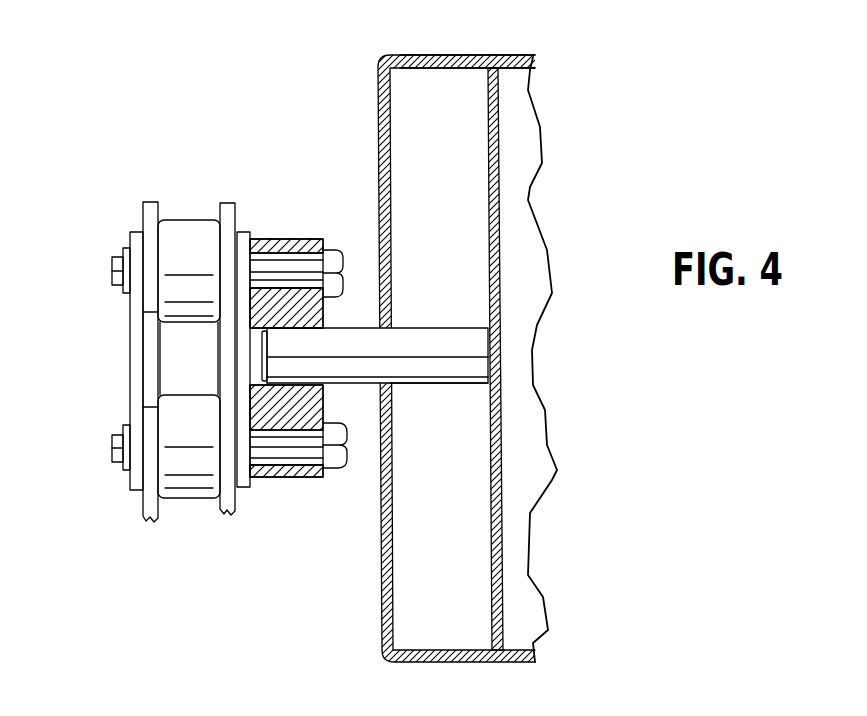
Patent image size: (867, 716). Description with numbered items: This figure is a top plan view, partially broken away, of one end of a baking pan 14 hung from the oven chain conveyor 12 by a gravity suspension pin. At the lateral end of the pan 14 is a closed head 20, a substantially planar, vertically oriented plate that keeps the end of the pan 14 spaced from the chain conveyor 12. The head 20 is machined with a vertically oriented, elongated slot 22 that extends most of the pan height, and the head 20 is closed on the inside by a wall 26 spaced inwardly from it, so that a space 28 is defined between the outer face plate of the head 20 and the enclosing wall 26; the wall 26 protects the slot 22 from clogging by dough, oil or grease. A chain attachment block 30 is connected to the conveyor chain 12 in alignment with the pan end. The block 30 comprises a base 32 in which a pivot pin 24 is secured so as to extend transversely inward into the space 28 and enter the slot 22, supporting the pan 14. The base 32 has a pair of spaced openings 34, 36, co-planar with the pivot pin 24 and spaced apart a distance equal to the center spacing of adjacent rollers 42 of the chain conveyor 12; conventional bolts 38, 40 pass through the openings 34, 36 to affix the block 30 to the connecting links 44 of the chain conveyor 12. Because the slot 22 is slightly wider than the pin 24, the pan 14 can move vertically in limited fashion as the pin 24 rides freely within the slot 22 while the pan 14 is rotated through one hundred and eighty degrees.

The oven chain conveyor 12 is at (139, 203).
The baking pan 14 is at (533, 57).
The closed head 20 is at (379, 122).
The elongated slot 22 is at (395, 387).
The pivot pin 24 is at (424, 335).
The wall 26 is at (502, 297).
The space 28 is at (473, 80).
The chain attachment block 30 is at (276, 232).
The base 32 is at (282, 478).
The opening 34 is at (290, 243).
The opening 36 is at (297, 478).
The bolt 38 is at (337, 250).
The bolt 40 is at (338, 460).
The roller 42 is at (200, 225).
The connecting link 44 is at (129, 237).